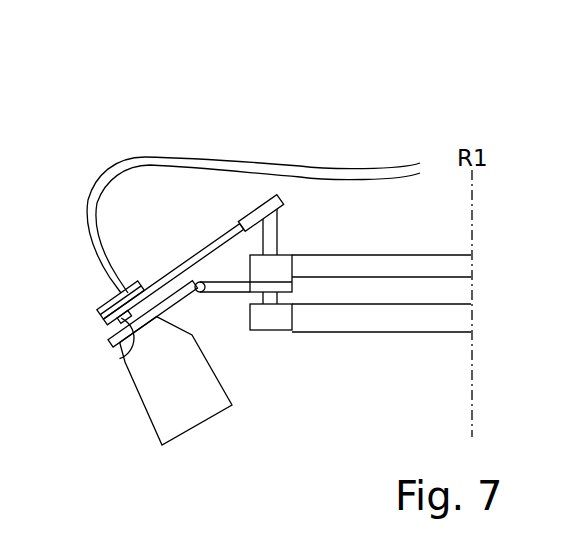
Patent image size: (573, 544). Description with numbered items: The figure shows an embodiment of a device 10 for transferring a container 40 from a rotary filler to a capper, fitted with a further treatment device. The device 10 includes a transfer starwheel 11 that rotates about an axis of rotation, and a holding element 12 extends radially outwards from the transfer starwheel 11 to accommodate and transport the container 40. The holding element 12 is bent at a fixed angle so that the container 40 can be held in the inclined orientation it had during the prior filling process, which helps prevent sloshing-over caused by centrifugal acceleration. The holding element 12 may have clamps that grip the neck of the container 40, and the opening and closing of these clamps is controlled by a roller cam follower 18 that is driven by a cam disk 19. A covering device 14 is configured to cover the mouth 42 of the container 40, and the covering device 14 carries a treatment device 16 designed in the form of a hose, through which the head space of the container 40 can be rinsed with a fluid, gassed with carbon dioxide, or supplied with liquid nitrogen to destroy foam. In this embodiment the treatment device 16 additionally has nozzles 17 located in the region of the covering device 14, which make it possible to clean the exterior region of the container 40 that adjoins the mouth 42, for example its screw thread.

The device 10 is at (344, 129).
The transfer starwheel 11 is at (363, 262).
The holding element 12 is at (215, 291).
The covering device 14 is at (148, 291).
The treatment device 16 is at (192, 158).
The nozzles 17 is at (104, 302).
The roller cam follower 18 is at (276, 315).
The cam disk 19 is at (384, 322).
The container 40 is at (147, 398).
The mouth 42 is at (119, 360).